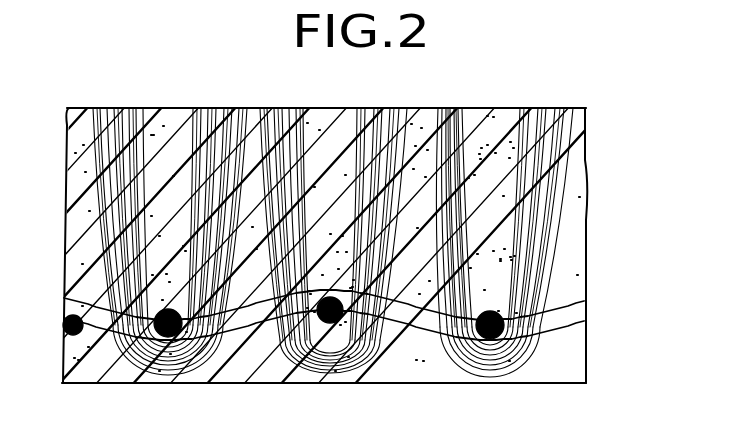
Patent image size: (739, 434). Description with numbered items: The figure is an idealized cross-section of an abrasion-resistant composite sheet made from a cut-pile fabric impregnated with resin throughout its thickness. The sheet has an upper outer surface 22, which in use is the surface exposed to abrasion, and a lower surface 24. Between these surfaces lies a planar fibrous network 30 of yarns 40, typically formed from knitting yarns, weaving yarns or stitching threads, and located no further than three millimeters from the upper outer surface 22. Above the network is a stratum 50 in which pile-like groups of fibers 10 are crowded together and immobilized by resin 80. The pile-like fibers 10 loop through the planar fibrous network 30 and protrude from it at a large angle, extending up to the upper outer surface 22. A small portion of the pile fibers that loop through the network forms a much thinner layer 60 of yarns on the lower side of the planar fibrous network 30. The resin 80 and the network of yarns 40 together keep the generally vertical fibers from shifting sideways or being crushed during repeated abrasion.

The pile-like groups of fibers 10 is at (302, 116).
The upper outer surface 22 is at (480, 108).
The lower surface 24 is at (283, 380).
The planar fibrous network 30 is at (609, 290).
The yarns 40 is at (70, 318).
The stratum 50 is at (375, 198).
The thinner layer of yarns 60 is at (609, 340).
The resin 80 is at (176, 125).